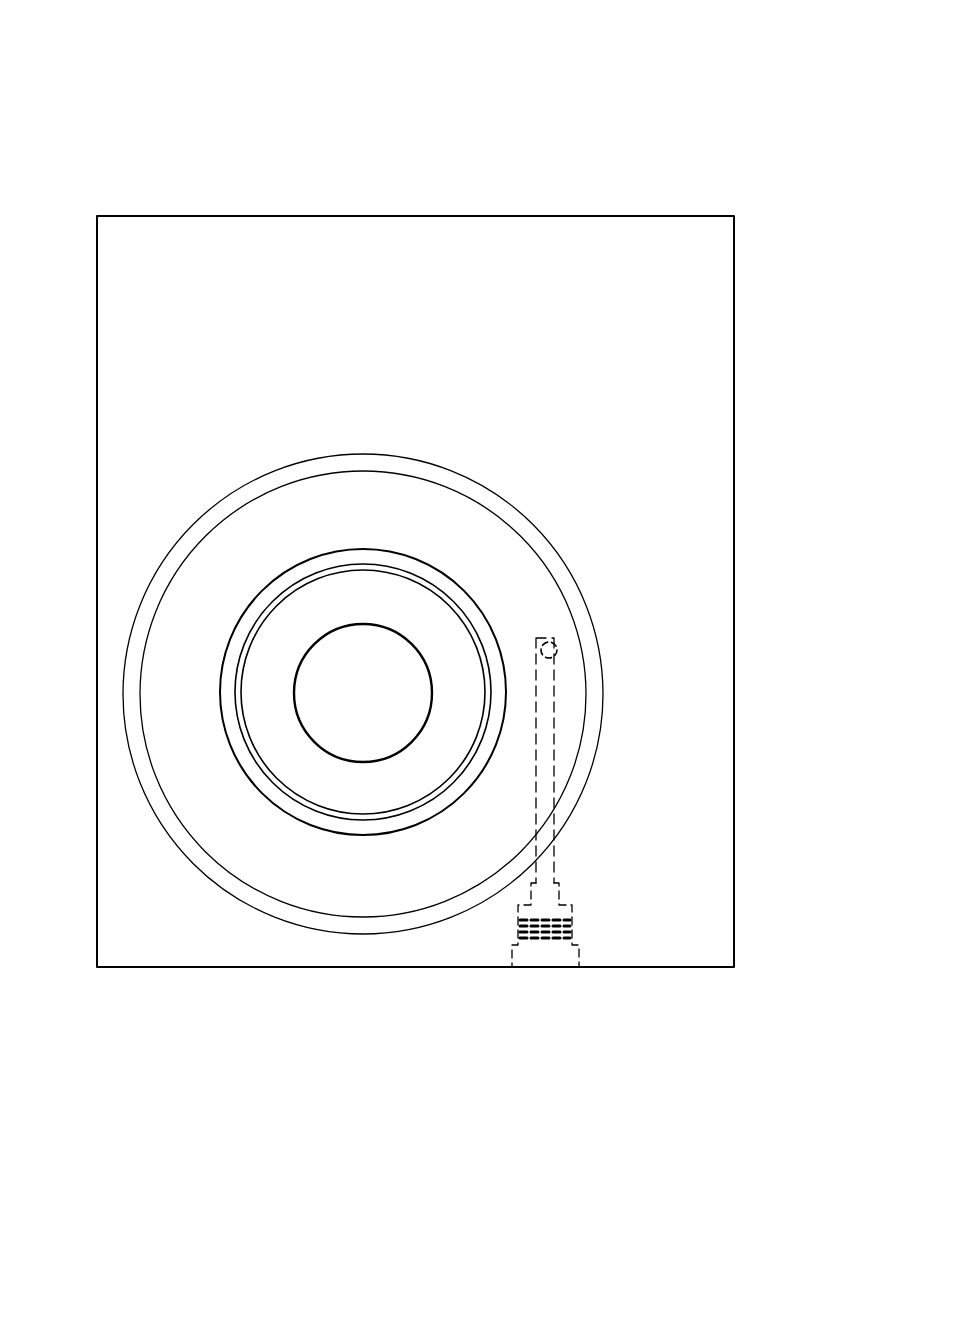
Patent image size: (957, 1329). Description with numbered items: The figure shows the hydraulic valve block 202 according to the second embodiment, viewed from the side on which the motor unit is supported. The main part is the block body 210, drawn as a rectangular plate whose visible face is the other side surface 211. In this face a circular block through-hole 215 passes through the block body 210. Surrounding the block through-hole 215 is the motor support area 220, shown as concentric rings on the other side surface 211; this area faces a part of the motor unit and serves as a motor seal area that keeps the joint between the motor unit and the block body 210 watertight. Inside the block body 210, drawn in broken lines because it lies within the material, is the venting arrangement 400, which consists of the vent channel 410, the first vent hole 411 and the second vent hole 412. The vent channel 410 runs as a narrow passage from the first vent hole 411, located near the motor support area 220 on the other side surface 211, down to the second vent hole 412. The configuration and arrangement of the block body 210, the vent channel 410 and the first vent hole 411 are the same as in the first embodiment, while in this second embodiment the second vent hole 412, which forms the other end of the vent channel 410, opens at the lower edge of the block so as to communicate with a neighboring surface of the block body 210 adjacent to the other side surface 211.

The hydraulic valve block 202 is at (101, 42).
The block body 210 is at (343, 203).
The other side surface 211 is at (147, 304).
The block through-hole 215 is at (352, 703).
The motor support area 220 is at (205, 773).
The vent structure 400 is at (780, 1136).
The vent channel 410 is at (545, 763).
The first vent hole 411 is at (557, 646).
The second vent hole 412 is at (547, 955).